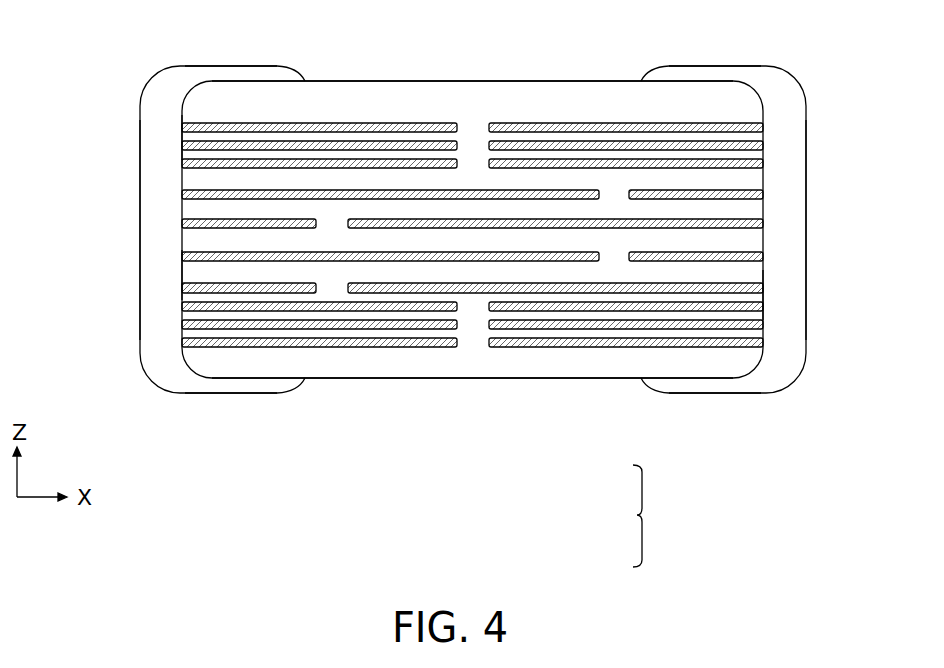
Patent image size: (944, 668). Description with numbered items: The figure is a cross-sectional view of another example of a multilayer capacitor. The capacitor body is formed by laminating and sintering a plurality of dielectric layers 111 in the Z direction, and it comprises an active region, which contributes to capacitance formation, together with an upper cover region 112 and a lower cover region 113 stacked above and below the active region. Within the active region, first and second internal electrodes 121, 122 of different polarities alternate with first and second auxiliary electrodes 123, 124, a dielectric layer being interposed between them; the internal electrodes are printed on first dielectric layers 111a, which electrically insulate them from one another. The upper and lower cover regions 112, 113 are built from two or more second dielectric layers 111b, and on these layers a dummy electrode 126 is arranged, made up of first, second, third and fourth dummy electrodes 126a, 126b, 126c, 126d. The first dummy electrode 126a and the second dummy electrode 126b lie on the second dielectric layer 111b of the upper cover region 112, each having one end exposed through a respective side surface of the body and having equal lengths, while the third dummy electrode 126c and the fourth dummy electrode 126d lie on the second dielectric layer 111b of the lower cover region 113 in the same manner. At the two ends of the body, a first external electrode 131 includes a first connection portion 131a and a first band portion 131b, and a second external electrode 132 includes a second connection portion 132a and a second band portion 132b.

The dielectric layer 111 is at (312, 487).
The first dielectric layer 111a is at (183, 272).
The second dielectric layer 111b is at (183, 137).
The upper cover region 112 is at (447, 98).
The lower cover region 113 is at (447, 363).
The first internal electrode 121 is at (365, 190).
The second internal electrode 122 is at (597, 294).
The first auxiliary electrode 123 is at (708, 190).
The second auxiliary electrode 124 is at (270, 294).
The dummy electrode 126 is at (644, 515).
The first dummy electrode 126a is at (258, 123).
The second dummy electrode 126b is at (627, 123).
The third dummy electrode 126c is at (383, 348).
The fourth dummy electrode 126d is at (680, 348).
The first external electrode 131 is at (230, 448).
The first connection portion 131a is at (150, 310).
The first band portion 131b is at (238, 383).
The second external electrode 132 is at (867, 448).
The second connection portion 132a is at (797, 310).
The second band portion 132b is at (712, 386).